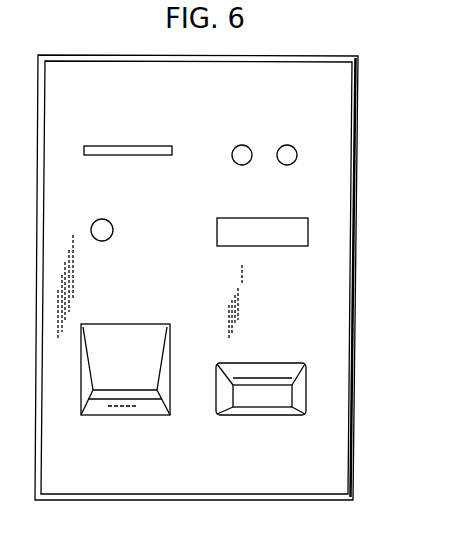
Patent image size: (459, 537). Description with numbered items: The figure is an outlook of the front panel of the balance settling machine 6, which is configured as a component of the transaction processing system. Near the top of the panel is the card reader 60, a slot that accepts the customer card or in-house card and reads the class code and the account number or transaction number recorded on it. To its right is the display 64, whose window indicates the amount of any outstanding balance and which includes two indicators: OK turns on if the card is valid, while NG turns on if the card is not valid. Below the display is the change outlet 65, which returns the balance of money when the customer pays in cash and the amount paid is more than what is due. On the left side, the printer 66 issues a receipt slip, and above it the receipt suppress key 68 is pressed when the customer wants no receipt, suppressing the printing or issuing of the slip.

The balance settling machine 6 is at (328, 55).
The card reader 60 is at (123, 146).
The display 64 is at (296, 218).
The change outlet 65 is at (255, 363).
The printer 66 is at (120, 323).
The receipt suppress key 68 is at (112, 222).